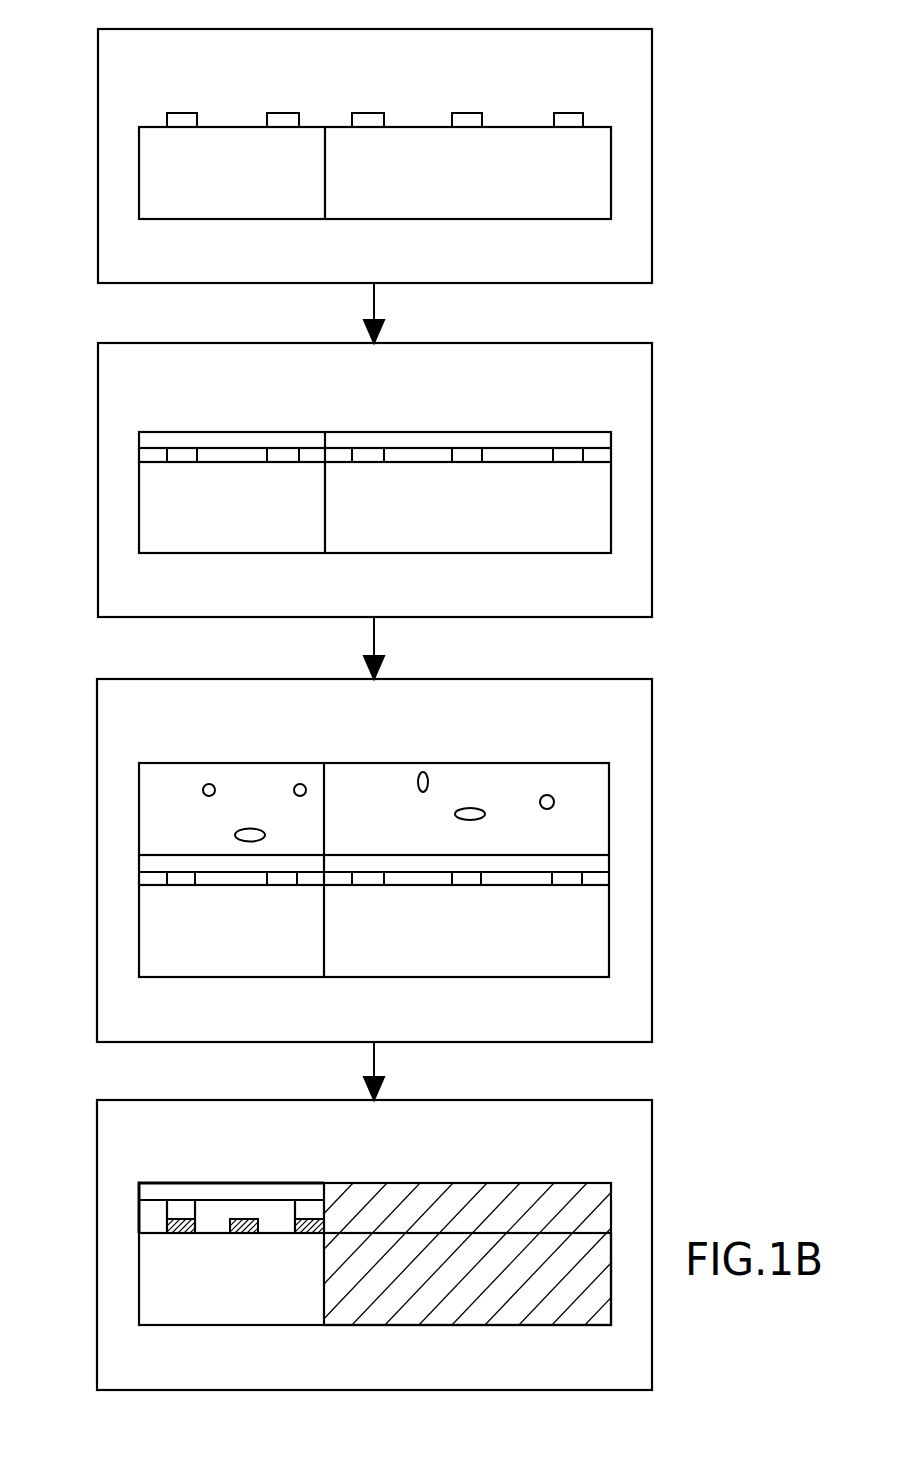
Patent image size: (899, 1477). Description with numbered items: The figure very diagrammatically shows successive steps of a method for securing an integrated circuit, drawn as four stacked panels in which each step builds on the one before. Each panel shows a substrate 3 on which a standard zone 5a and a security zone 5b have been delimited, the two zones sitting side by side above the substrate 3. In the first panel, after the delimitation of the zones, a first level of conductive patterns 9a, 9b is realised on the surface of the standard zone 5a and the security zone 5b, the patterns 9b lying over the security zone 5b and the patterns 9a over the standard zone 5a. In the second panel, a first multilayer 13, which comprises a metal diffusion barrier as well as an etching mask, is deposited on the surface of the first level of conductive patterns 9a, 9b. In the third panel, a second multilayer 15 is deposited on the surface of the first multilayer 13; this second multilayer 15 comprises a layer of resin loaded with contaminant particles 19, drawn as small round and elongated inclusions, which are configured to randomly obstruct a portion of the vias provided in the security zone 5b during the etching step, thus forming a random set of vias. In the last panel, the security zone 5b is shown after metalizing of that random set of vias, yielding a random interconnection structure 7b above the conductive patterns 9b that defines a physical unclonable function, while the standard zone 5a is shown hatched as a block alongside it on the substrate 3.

The substrate 3 is at (225, 208).
The standard zone 5a is at (435, 103).
The security zone 5b is at (233, 105).
The random interconnection structure 7b is at (155, 1210).
The conductive patterns 9a is at (572, 117).
The conductive patterns 9b is at (182, 117).
The first multilayer 13 is at (147, 440).
The second multilayer 15 is at (150, 814).
The contaminant particles 19 is at (207, 784).